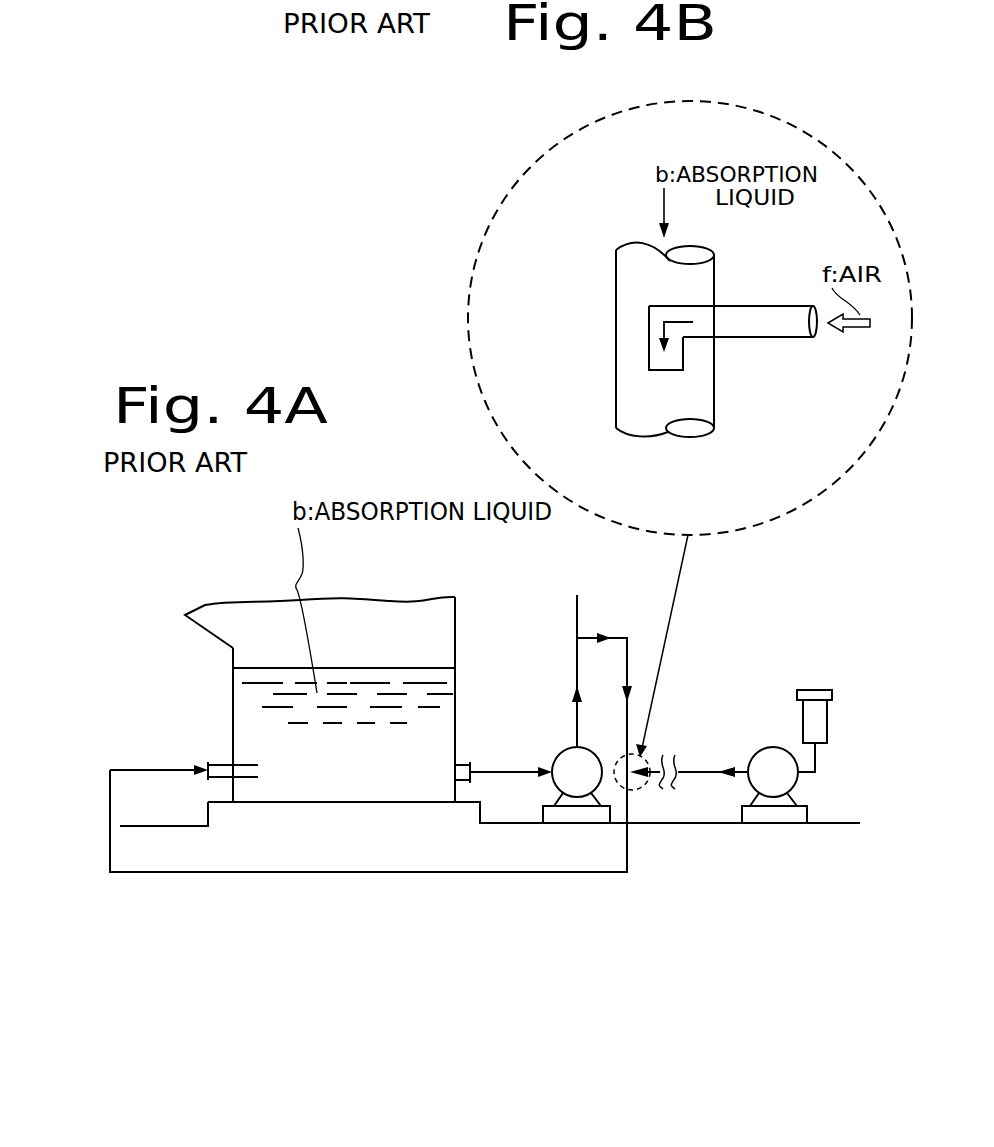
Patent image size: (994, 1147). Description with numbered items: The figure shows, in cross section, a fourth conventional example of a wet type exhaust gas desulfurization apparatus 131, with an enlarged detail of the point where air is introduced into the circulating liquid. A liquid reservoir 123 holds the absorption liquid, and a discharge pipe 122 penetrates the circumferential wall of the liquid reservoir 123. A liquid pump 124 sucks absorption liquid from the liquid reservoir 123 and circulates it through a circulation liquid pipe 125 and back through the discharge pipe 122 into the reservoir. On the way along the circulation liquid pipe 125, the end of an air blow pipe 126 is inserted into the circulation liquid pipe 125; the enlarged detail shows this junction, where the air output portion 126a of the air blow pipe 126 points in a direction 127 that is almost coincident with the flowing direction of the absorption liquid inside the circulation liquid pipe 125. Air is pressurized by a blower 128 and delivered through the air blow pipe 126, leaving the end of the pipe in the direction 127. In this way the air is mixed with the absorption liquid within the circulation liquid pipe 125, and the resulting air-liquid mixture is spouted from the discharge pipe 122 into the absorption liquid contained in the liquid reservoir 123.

In FIG. 4A, the wet type exhaust gas desulfurization apparatus 131 is at (165, 588).
In FIG. 4A, the liquid reservoir 123 is at (233, 712).
In FIG. 4A, the discharge pipe 122 is at (245, 778).
In FIG. 4B, the circulation liquid pipe 125 is at (613, 298).
In FIG. 4A, the circulation liquid pipe 125 is at (423, 873).
In FIG. 4A, the liquid pump 124 is at (565, 752).
In FIG. 4B, the air blow pipe 126 is at (751, 303).
In FIG. 4A, the air blow pipe 126 is at (703, 777).
In FIG. 4B, the air output portion 126a is at (647, 357).
In FIG. 4B, the direction 127 is at (680, 338).
In FIG. 4A, the blower 128 is at (767, 747).